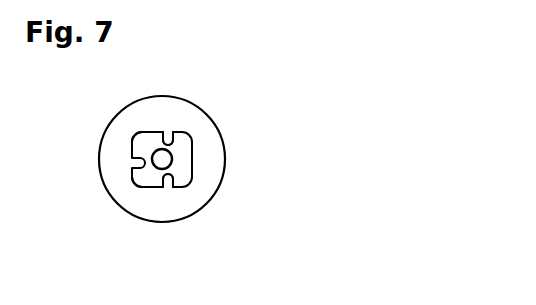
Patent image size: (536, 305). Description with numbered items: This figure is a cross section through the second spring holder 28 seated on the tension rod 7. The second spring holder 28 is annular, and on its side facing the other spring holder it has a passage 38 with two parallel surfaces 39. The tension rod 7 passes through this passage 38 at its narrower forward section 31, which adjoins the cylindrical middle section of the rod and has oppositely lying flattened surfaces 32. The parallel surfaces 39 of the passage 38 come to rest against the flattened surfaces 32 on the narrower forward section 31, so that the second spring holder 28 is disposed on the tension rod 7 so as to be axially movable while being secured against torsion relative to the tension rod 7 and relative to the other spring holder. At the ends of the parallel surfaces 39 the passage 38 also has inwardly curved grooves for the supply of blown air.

The tension rod 7 is at (192, 147).
The second spring holder 28 is at (198, 187).
The narrower forward section 31 is at (183, 160).
The flattened surfaces 32 is at (155, 132).
The passage 38 is at (144, 164).
The parallel surfaces 39 is at (178, 132).